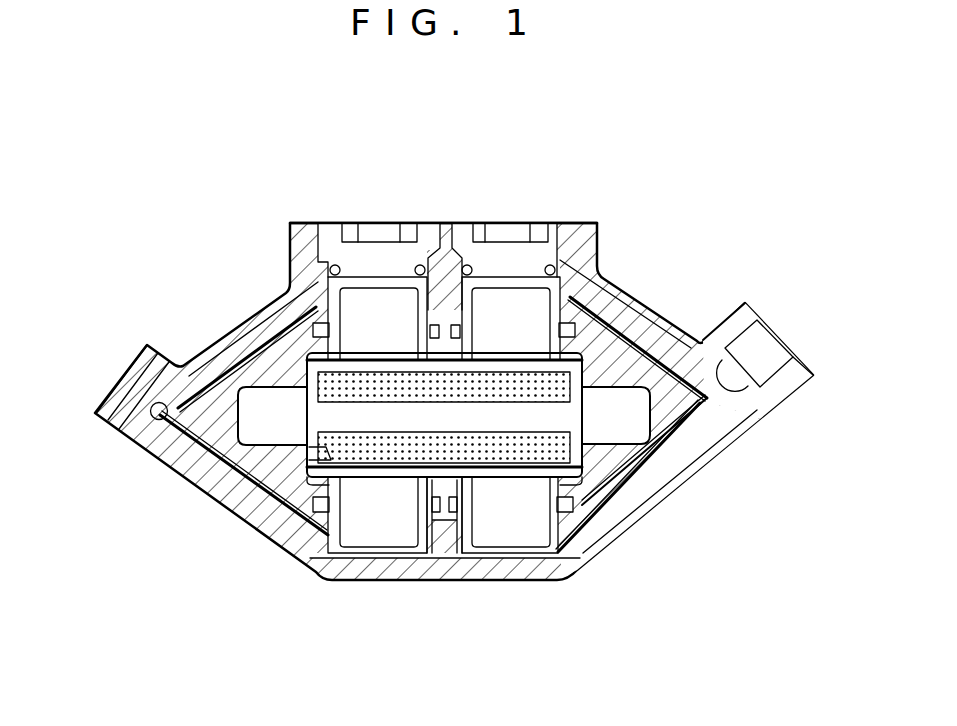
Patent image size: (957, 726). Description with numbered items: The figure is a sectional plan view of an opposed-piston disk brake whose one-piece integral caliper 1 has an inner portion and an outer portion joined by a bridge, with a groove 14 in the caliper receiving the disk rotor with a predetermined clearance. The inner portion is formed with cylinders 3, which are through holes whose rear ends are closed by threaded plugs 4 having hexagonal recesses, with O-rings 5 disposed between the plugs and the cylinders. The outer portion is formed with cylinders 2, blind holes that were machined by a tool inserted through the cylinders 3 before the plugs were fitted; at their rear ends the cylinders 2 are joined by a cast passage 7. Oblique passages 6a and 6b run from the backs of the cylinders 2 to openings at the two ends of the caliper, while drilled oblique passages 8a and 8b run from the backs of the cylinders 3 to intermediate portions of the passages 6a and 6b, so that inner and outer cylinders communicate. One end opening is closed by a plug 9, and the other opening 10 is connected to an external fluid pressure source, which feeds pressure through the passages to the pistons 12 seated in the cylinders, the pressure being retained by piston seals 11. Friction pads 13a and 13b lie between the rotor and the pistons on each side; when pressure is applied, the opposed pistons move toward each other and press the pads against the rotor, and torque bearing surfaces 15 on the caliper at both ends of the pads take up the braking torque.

The caliper 1 is at (645, 295).
The cylinders 2 is at (552, 550).
The cylinders 3 is at (555, 306).
The plugs 4 is at (505, 252).
The O-rings 5 is at (585, 224).
The oblique passage 6a is at (297, 507).
The oblique passage 6b is at (660, 448).
The passage 7 is at (448, 557).
The oblique passage 8a is at (265, 347).
The oblique passage 8b is at (648, 342).
The plug 9 is at (128, 386).
The opening 10 is at (767, 347).
The piston seals 11 is at (573, 505).
The pistons 12 is at (453, 523).
The friction pad 13a is at (376, 364).
The friction pad 13b is at (397, 467).
The groove 14 is at (610, 445).
The torque bearing surfaces 15 is at (327, 473).